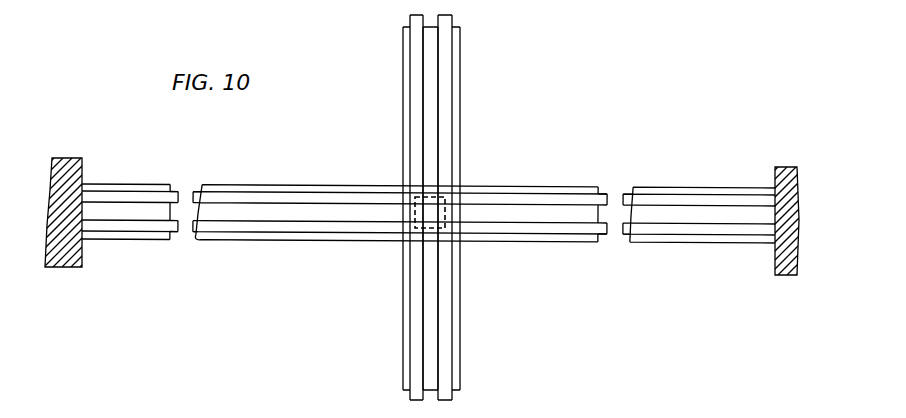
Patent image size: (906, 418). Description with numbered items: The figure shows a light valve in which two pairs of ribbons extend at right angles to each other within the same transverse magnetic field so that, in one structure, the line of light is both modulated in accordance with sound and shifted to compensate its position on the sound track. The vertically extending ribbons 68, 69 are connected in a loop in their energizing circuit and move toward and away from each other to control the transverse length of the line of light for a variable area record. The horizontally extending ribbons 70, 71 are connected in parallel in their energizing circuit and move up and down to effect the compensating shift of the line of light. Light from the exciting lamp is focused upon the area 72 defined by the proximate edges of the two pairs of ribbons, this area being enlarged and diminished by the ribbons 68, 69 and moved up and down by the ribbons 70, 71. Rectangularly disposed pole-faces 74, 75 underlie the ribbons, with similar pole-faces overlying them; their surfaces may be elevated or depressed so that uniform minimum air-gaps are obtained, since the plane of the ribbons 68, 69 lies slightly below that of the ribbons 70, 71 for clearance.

The ribbon 68 is at (448, 23).
The ribbon 69 is at (415, 23).
The ribbon 70 is at (259, 198).
The ribbon 71 is at (312, 228).
The area 72 is at (426, 212).
The pole-face 74 is at (208, 186).
The pole-face 75 is at (403, 100).